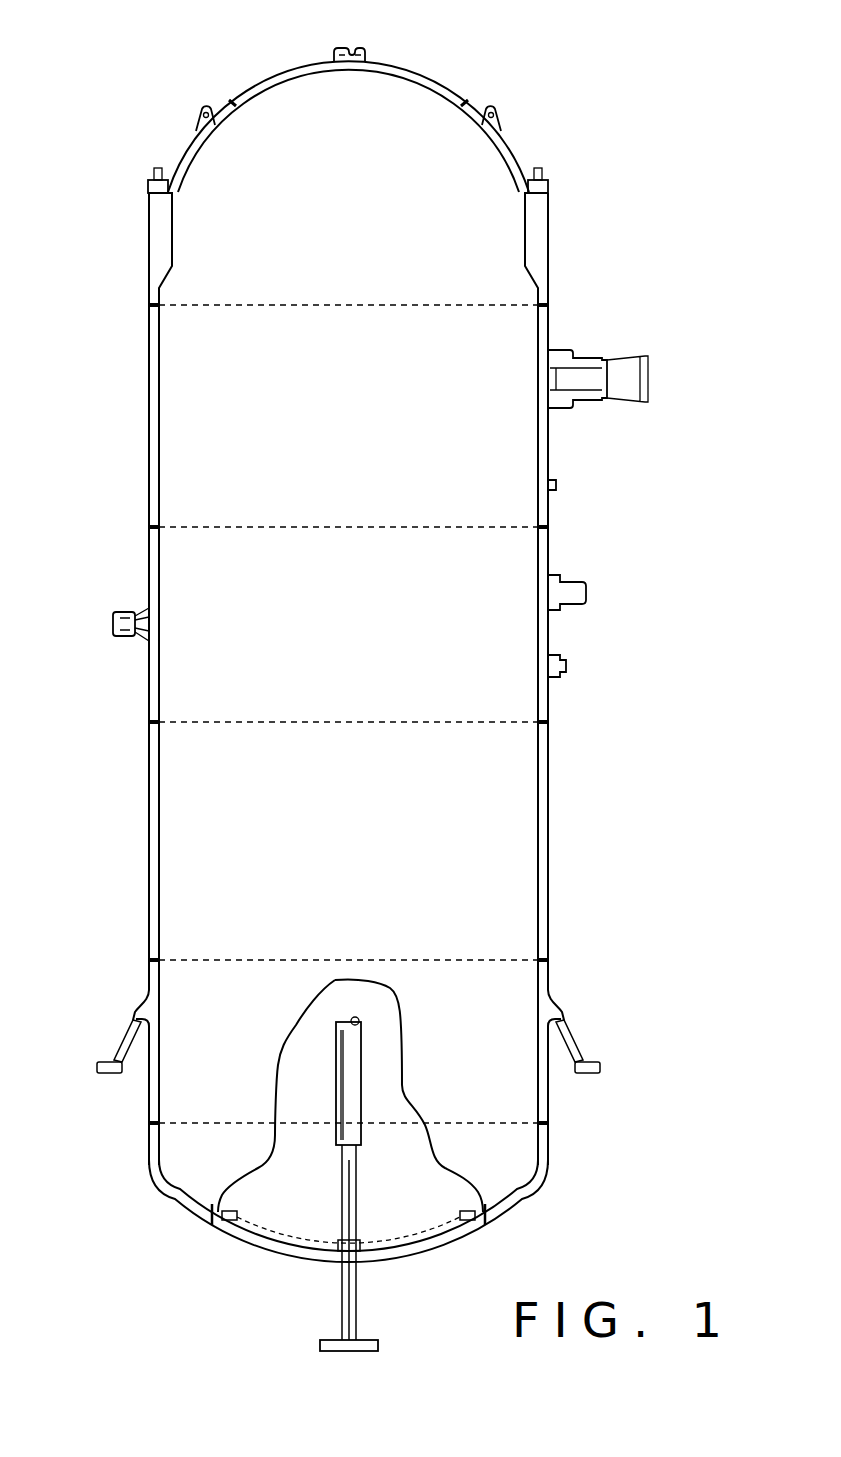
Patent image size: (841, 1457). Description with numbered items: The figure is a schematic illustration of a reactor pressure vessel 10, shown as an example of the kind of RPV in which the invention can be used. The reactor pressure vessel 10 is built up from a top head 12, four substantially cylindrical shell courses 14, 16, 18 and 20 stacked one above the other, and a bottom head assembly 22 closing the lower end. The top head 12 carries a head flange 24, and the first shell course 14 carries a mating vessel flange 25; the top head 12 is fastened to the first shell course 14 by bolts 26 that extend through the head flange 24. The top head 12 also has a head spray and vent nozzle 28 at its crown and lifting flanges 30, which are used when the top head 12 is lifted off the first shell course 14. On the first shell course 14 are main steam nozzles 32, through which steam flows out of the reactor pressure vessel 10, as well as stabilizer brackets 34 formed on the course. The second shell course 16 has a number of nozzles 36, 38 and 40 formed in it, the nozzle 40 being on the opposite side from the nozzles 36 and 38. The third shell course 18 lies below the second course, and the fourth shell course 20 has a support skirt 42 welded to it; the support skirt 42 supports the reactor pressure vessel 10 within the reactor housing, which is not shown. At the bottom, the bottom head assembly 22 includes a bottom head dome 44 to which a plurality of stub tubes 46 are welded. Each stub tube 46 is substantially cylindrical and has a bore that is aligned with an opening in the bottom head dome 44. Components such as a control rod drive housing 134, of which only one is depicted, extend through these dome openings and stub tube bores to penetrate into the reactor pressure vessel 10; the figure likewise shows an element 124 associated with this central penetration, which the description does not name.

The reactor pressure vessel 10 is at (641, 55).
The top head 12 is at (433, 68).
The first shell course 14 is at (560, 443).
The second shell course 16 is at (560, 632).
The third shell course 18 is at (565, 838).
The fourth shell course 20 is at (565, 1098).
The bottom head assembly 22 is at (422, 1258).
The head flange 24 is at (550, 216).
The vessel flange 25 is at (148, 262).
The bolts 26 is at (148, 185).
The head spray and vent nozzle 28 is at (352, 48).
The lifting flanges 30 is at (198, 124).
The main steam nozzles 32 is at (600, 352).
The stabilizer brackets 34 is at (560, 490).
The nozzle 36 is at (580, 577).
The nozzle 38 is at (567, 676).
The nozzle 40 is at (118, 612).
The support skirt 42 is at (578, 1042).
The bottom head dome 44 is at (330, 1252).
The stub tubes 46 is at (232, 1212).
The center tube 124 is at (345, 1075).
The control rod drive housing 134 is at (340, 1329).